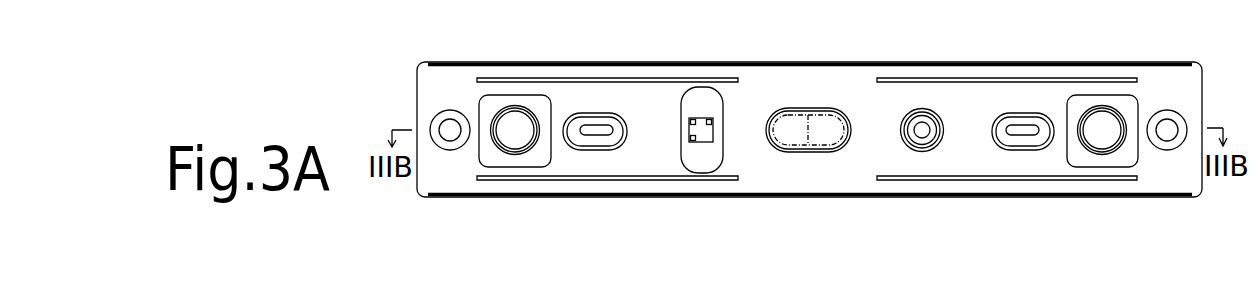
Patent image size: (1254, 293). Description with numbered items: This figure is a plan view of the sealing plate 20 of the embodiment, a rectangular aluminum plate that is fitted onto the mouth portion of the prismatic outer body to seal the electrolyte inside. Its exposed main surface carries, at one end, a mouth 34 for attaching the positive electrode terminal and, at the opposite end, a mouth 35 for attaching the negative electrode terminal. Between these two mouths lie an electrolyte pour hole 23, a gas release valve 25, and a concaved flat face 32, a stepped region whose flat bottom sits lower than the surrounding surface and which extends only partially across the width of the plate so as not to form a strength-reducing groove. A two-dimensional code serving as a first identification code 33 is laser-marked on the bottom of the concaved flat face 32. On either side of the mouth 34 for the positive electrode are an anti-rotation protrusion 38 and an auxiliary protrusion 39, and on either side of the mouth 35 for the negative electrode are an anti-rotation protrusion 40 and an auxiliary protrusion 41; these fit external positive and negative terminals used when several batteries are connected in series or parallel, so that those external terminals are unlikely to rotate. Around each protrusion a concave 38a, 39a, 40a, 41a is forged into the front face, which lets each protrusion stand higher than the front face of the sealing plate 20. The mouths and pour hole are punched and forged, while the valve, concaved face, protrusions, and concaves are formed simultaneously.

The sealing plate 20 is at (842, 87).
The electrolyte pour hole 23 is at (922, 133).
The gas release valve 25 is at (792, 135).
The concaved flat face 32 is at (698, 95).
The first identification code 33 is at (703, 135).
The mouth for attaching the positive electrode terminal 34 is at (1102, 123).
The mouth for attaching the negative electrode terminal 35 is at (515, 127).
The anti-rotation protrusion 38 is at (1023, 120).
The concave 38a is at (993, 137).
The auxiliary protrusion 39 is at (1166, 127).
The concave 39a is at (1168, 147).
The anti-rotation protrusion 40 is at (600, 118).
The concave 40a is at (573, 147).
The auxiliary protrusion 41 is at (453, 127).
The concave 41a is at (447, 145).